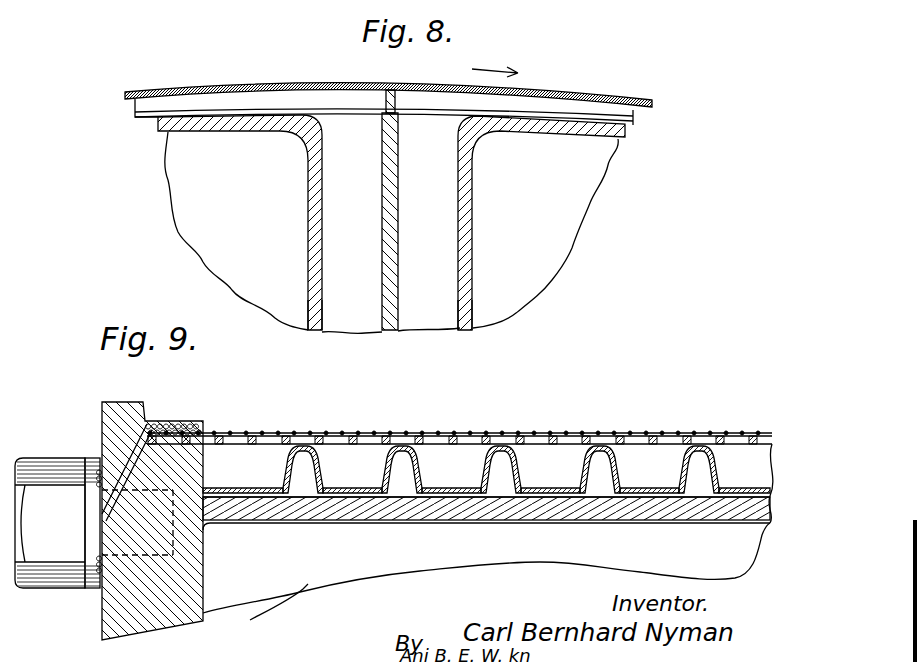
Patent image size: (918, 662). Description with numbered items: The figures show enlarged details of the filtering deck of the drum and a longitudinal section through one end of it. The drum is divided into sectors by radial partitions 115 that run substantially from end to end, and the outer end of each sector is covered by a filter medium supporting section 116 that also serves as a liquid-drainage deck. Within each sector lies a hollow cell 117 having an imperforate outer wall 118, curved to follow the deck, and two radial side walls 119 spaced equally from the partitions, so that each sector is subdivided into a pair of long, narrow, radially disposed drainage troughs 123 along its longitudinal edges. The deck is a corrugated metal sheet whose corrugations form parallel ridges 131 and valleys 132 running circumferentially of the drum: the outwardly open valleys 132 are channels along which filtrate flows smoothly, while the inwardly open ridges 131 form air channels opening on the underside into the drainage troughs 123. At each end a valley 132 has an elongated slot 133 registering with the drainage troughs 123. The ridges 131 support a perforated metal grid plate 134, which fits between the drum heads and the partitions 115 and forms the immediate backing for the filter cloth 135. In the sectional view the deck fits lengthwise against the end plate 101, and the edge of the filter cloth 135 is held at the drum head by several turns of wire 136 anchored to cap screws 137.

In FIG. 9, the end plate 101 is at (203, 592).
In FIG. 8, the radial partition 115 is at (392, 238).
In FIG. 8, the filter medium supporting section 116 is at (584, 112).
In FIG. 9, the filter medium supporting section 116 is at (428, 496).
In FIG. 8, the hollow cell 117 is at (391, 231).
In FIG. 8, the imperforate outer wall 118 is at (210, 128).
In FIG. 9, the imperforate outer wall 118 is at (384, 519).
In FIG. 8, the radial side wall 119 is at (308, 281).
In FIG. 9, the radial side wall 119 is at (279, 614).
In FIG. 8, the drainage trough 123 is at (363, 318).
In FIG. 9, the drainage trough 123 is at (488, 528).
In FIG. 9, the ridge 131 is at (302, 456).
In FIG. 9, the valley 132 is at (246, 489).
In FIG. 8, the elongated slot 133 is at (357, 112).
In FIG. 8, the perforated metal grid plate 134 is at (316, 92).
In FIG. 9, the perforated metal grid plate 134 is at (238, 432).
In FIG. 8, the filter cloth 135 is at (446, 87).
In FIG. 9, the filter cloth 135 is at (600, 431).
In FIG. 9, the wire 136 is at (173, 424).
In FIG. 9, the cap screw 137 is at (48, 458).